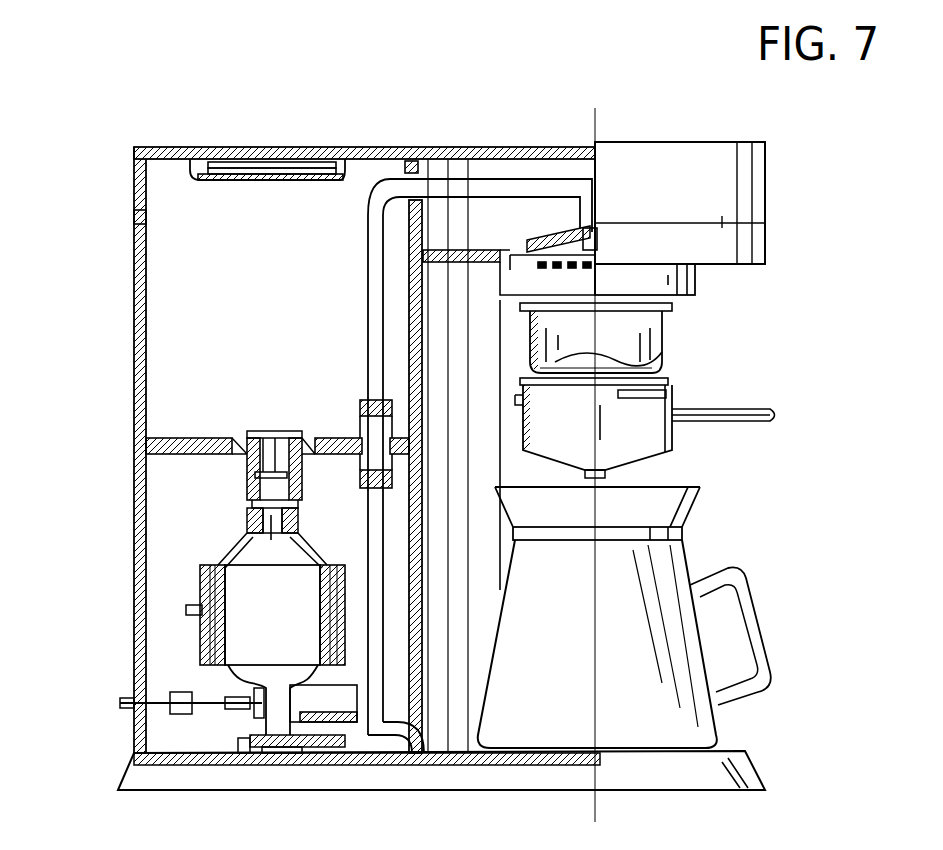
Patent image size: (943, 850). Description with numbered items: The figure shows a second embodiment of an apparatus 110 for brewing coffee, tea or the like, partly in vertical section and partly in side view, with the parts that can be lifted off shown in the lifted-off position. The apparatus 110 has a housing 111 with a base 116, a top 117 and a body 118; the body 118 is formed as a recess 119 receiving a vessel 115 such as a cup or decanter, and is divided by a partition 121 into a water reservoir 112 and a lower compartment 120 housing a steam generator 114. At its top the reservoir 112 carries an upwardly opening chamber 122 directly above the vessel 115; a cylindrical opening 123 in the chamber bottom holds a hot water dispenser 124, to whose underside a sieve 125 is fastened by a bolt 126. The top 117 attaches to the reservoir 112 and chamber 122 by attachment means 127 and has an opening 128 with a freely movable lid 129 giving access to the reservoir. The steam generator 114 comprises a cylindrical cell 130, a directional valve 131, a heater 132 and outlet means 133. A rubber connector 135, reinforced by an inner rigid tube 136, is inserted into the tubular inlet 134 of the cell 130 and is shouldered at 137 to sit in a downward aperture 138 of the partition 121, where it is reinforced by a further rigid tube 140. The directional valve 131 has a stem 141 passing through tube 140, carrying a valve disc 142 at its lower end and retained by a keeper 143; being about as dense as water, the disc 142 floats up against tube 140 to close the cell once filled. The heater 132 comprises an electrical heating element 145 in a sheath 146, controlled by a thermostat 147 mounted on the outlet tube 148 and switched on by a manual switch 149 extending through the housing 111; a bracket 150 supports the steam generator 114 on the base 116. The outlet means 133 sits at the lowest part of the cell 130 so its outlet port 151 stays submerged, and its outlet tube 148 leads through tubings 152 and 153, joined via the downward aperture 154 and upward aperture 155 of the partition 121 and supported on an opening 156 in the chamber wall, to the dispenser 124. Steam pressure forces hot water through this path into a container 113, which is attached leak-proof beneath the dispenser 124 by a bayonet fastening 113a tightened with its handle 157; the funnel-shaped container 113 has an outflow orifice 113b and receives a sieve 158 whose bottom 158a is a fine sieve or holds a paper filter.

The apparatus 110 is at (642, 133).
The housing 111 is at (128, 142).
The reservoir 112 is at (160, 242).
The container 113 is at (672, 452).
The bayonet fastening 113a is at (640, 392).
The outflow orifice 113b is at (608, 472).
The steam generator 114 is at (208, 527).
The vessel 115 is at (577, 682).
The base 116 is at (542, 793).
The top 117 is at (358, 150).
The body 118 is at (134, 296).
The recess 119 is at (507, 548).
The lower compartment 120 is at (163, 445).
The partition 121 is at (134, 368).
The chamber 122 is at (510, 165).
The cylindrical opening 123 is at (540, 284).
The hot water dispenser 124 is at (580, 240).
The sieve 125 is at (582, 270).
The bolt 126 is at (600, 240).
The attachment means 127 is at (134, 214).
The opening 128 is at (216, 163).
The lid 129 is at (266, 169).
The cell 130 is at (224, 673).
The directional valve 131 is at (305, 438).
The heater 132 is at (198, 570).
The outlet means 133 is at (304, 686).
The tubular inlet 134 is at (298, 520).
The connector 135 is at (250, 492).
The inner rigid tube 136 is at (278, 528).
The shoulder 137 is at (247, 440).
The downward aperture 138 is at (247, 462).
The inner rigid tube 140 is at (258, 432).
The stem 141 is at (264, 440).
The keeper 143 is at (278, 440).
The valve disc 142 is at (298, 496).
The electrical heating element 145 is at (188, 612).
The sheath 146 is at (198, 588).
The thermostat 147 is at (250, 735).
The outlet tube 148 is at (240, 747).
The manual switch 149 is at (120, 704).
The bracket 150 is at (266, 752).
The outlet port 151 is at (286, 753).
The tubing 152 is at (404, 750).
The tubing 153 is at (372, 282).
The downward aperture 154 is at (364, 456).
The upward aperture 155 is at (366, 438).
The opening 156 is at (406, 206).
The handle 157 is at (752, 410).
The sieve 158 is at (660, 312).
The bottom 158a is at (660, 356).